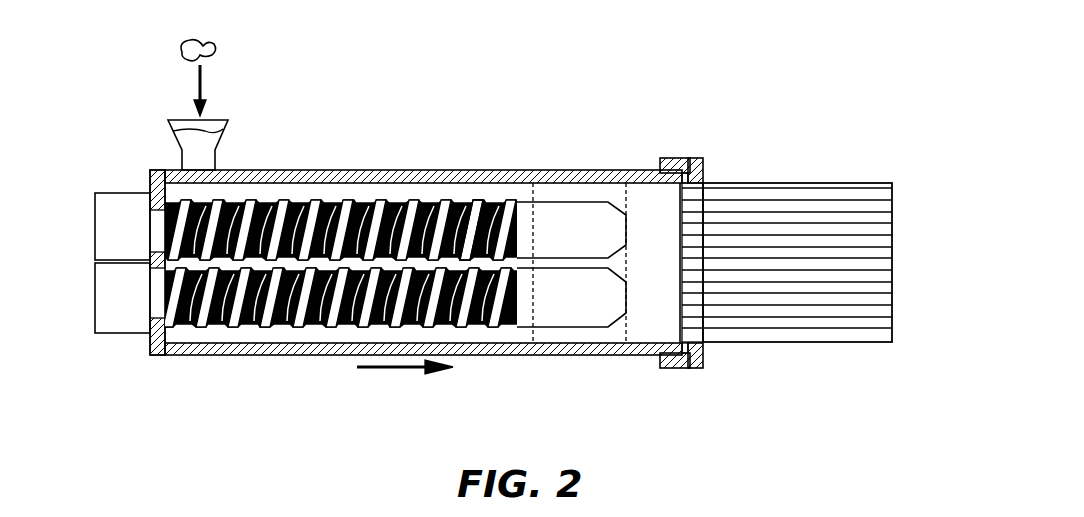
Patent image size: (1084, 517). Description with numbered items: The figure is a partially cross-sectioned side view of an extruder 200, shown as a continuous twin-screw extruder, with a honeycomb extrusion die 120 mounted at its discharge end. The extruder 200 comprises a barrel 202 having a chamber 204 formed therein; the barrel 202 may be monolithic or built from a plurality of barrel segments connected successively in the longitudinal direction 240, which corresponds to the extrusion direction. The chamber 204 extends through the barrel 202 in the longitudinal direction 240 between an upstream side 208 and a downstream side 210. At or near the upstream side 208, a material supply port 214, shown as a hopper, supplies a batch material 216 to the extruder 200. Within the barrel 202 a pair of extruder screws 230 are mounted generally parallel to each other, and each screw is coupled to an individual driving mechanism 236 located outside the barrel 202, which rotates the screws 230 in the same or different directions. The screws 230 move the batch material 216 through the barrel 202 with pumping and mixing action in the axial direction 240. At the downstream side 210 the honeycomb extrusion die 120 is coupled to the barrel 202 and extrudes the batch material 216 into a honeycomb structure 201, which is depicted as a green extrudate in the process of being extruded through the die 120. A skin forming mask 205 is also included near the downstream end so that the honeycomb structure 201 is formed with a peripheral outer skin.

The extruder 200 is at (586, 57).
The honeycomb structure 201 is at (818, 343).
The barrel 202 is at (378, 172).
The chamber 204 is at (364, 192).
The skin forming mask 205 is at (696, 158).
The upstream side 208 is at (160, 362).
The downstream side 210 is at (707, 371).
The material supply port 214 is at (180, 143).
The batch material 216 is at (216, 53).
The extruder screws 230 is at (463, 200).
The driving mechanism 236 is at (125, 193).
The longitudinal direction 240 is at (395, 370).
The honeycomb extrusion die 120 is at (705, 200).